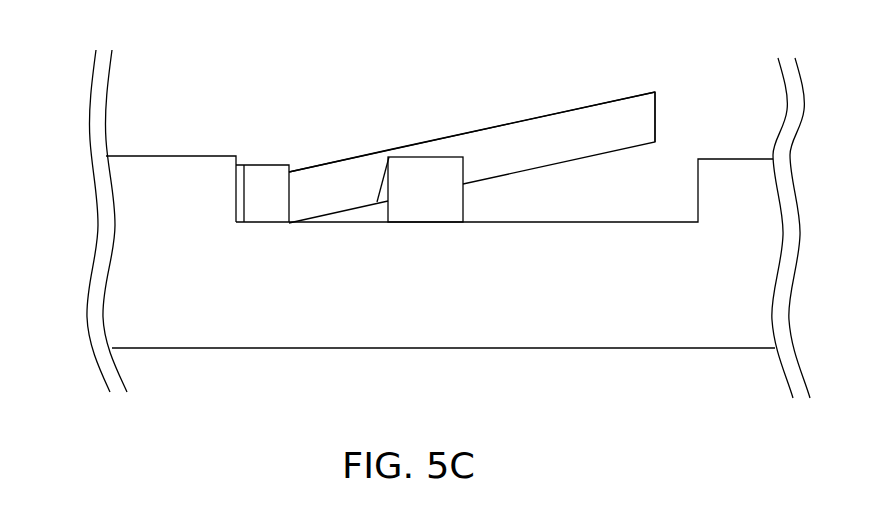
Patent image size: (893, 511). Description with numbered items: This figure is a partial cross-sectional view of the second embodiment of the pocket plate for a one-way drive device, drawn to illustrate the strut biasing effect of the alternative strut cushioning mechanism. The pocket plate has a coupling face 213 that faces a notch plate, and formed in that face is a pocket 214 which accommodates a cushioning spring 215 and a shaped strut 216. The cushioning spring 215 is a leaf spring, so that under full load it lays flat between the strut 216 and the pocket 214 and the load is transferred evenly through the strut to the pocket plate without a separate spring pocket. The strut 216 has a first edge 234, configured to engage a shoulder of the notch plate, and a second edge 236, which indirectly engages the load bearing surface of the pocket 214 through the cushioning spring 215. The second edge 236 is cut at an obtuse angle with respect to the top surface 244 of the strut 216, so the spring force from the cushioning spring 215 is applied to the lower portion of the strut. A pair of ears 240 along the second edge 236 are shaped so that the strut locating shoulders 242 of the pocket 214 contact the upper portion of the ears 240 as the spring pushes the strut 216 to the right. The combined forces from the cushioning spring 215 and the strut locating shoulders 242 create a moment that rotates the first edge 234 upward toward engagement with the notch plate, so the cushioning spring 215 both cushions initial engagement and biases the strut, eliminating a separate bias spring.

The coupling face 213 is at (198, 155).
The pocket 214 is at (602, 223).
The cushioning spring 215 is at (270, 165).
The strut 216 is at (549, 165).
The first edge 234 is at (657, 112).
The second edge 236 is at (291, 180).
The ears 240 is at (348, 158).
The strut locating shoulders 242 is at (427, 222).
The top surface 244 is at (510, 122).